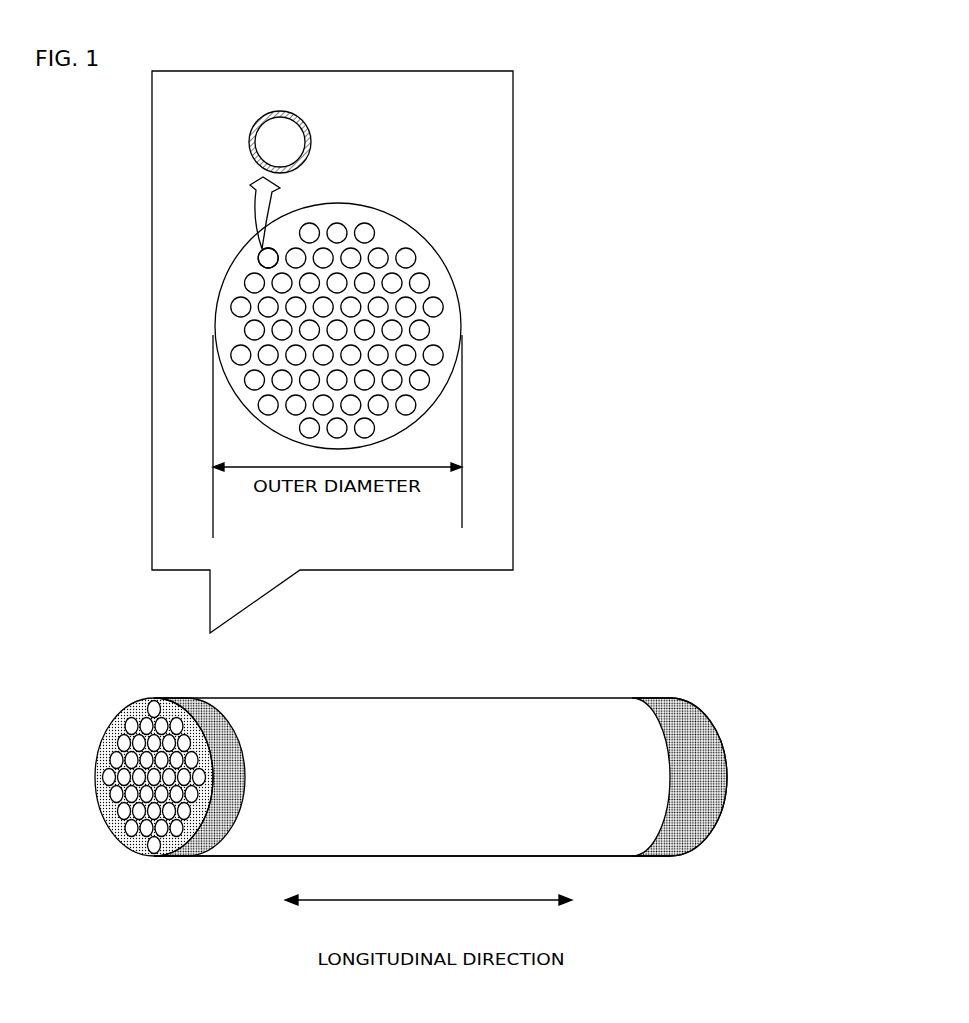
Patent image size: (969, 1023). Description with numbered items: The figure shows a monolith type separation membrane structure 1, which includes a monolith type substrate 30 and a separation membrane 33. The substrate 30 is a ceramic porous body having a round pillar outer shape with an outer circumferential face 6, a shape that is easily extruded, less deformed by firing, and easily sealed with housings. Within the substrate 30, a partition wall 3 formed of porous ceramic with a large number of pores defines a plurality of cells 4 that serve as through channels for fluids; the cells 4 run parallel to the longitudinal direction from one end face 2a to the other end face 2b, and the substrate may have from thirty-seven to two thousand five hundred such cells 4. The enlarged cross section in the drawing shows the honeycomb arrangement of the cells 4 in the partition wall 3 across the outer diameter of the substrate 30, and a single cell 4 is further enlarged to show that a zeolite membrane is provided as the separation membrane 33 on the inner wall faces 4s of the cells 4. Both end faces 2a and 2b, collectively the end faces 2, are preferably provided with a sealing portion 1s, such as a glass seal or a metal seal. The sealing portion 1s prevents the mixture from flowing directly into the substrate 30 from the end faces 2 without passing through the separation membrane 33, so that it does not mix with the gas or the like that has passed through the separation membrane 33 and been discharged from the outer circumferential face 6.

The separation membrane structure 1 is at (413, 537).
The sealing portion 1s is at (160, 858).
The end faces 2 is at (413, 756).
The one end face 2a is at (122, 705).
The other end face 2b is at (718, 732).
The partition wall 3 is at (430, 291).
The cells 4 is at (273, 150).
The inner wall faces 4s is at (262, 117).
The outer circumferential face 6 is at (607, 842).
The monolith type substrate 30 is at (397, 233).
The separation membrane 33 is at (312, 145).